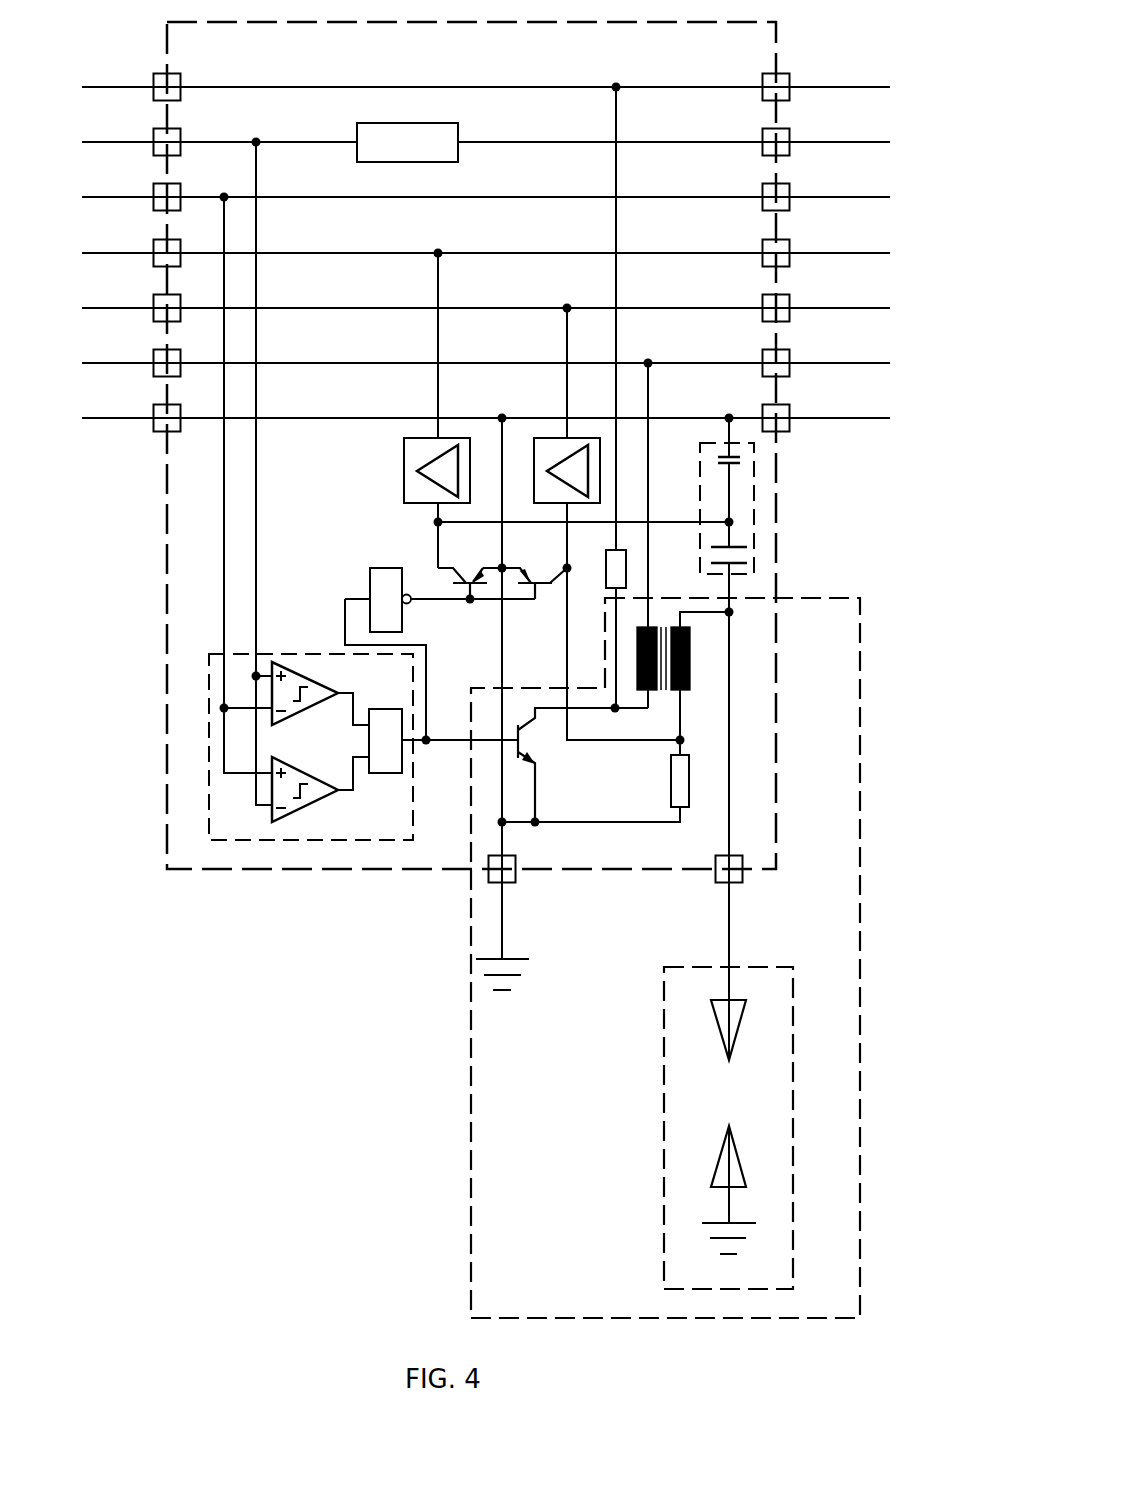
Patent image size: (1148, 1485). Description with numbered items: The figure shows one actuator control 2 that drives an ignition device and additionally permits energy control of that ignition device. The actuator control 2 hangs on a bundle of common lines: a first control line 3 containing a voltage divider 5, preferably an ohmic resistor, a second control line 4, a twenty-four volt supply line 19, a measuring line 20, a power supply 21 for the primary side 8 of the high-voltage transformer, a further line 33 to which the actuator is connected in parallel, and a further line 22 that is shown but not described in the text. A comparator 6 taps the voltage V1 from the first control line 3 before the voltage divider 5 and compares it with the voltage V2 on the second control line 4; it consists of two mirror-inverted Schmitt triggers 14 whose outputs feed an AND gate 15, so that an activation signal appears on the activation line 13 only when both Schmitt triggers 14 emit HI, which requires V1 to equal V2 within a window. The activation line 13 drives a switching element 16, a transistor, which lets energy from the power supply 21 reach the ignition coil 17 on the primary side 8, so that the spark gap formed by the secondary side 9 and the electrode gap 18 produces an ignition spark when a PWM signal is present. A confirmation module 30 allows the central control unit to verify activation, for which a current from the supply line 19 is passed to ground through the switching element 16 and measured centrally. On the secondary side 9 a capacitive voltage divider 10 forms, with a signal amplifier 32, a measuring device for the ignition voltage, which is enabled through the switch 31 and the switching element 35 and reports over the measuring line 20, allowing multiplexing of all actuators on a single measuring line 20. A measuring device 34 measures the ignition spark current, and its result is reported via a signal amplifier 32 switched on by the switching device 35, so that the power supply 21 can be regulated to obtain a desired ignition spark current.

The actuator control 2 is at (167, 497).
The first control line 3 is at (832, 142).
The second control line 4 is at (832, 197).
The voltage divider 5 is at (418, 145).
The comparator 6 is at (261, 747).
The primary side 8 is at (648, 719).
The secondary side 9 is at (697, 705).
The voltage divider 10 is at (754, 506).
The activation line 13 is at (443, 744).
The Schmitt trigger 14 is at (274, 691).
The AND gate 15 is at (386, 764).
The switching element 16 is at (516, 768).
The ignition coil 17 is at (746, 714).
The electrode gap 18 is at (711, 1080).
The 24 volt supply line 19 is at (832, 87).
The measuring line 20 is at (832, 253).
The power supply 21 is at (832, 418).
The signal line 22 is at (832, 363).
The confirmation module 30 is at (605, 571).
The switch 31 is at (385, 579).
The signal amplifier 32 is at (418, 453).
The further line 33 is at (832, 308).
The measuring device 34 is at (683, 807).
The switching device 35 is at (530, 560).